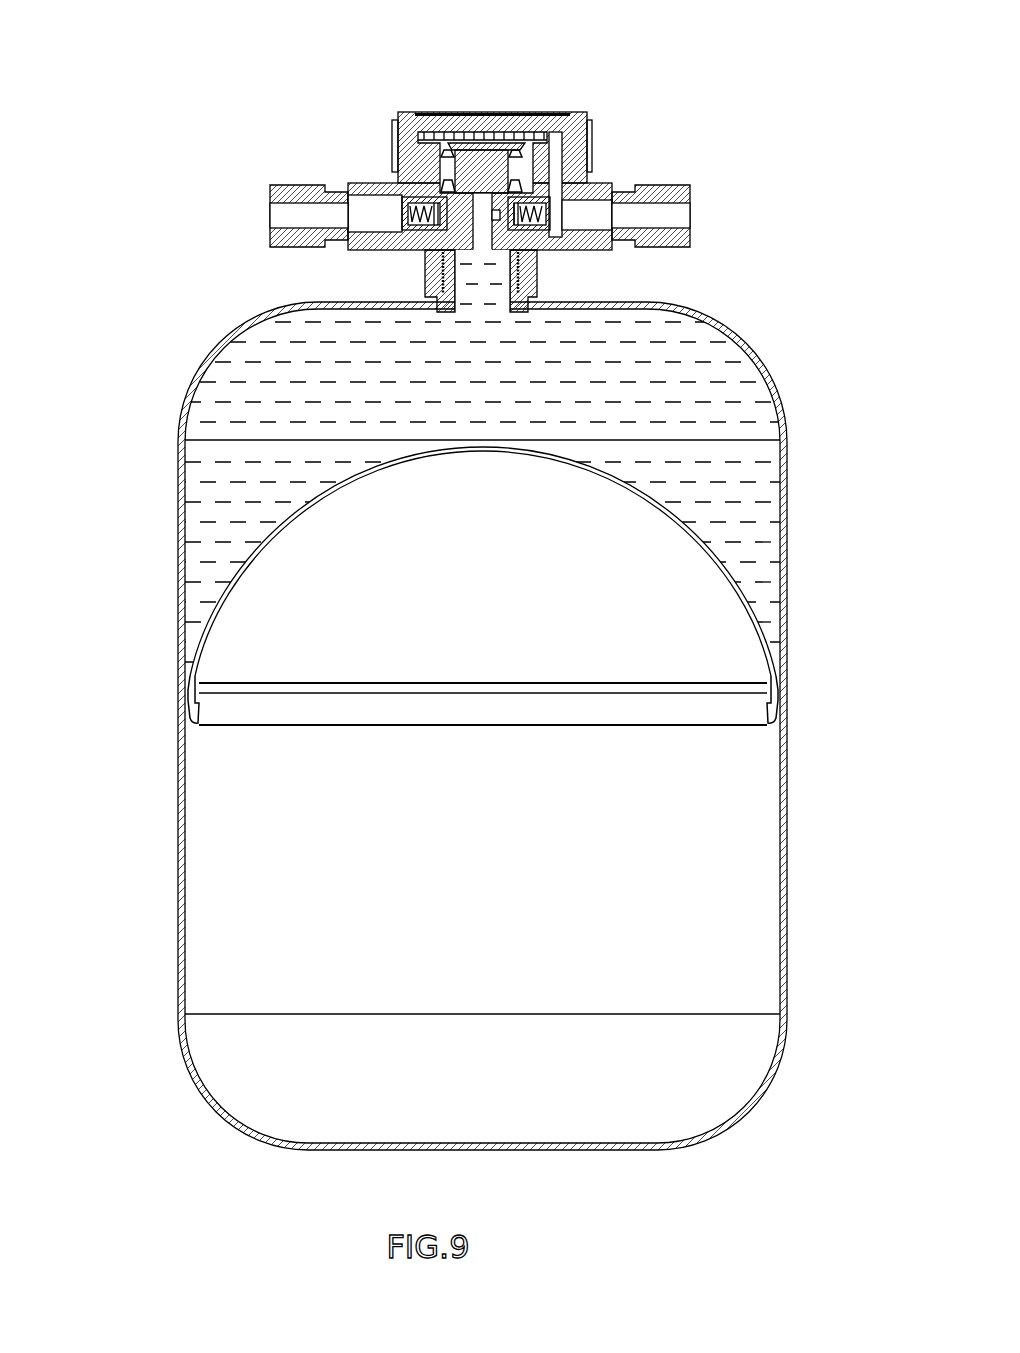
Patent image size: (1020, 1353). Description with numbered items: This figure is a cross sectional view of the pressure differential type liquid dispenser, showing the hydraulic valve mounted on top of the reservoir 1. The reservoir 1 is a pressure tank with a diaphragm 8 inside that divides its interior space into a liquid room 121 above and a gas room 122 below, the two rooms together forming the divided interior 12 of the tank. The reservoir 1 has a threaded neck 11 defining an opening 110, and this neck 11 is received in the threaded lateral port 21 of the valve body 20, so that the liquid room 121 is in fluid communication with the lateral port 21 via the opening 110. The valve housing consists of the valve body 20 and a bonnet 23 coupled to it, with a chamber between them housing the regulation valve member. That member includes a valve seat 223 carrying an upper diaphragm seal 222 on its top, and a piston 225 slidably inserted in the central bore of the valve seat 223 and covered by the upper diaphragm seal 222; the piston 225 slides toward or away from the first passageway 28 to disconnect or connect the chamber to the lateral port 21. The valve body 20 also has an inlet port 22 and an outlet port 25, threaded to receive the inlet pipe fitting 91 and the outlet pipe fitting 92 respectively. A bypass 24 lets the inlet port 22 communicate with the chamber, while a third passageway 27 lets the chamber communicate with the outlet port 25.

The reservoir 1 is at (180, 880).
The diaphragm 8 is at (259, 544).
The neck 11 is at (452, 298).
The opening 110 is at (486, 292).
The inner chamber 12 is at (90, 530).
The liquid room 121 is at (198, 576).
The gas room 122 is at (199, 802).
The valve body 20 is at (560, 247).
The lateral port 21 is at (530, 280).
The inlet port 22 is at (595, 207).
The upper diaphragm seal 222 is at (470, 150).
The valve seat 223 is at (436, 146).
The piston 225 is at (488, 153).
The bonnet 23 is at (548, 122).
The bypass 24 is at (556, 158).
The outlet port 25 is at (368, 208).
The third passageway 27 is at (448, 178).
The first passageway 28 is at (478, 243).
The inlet pipe fitting 91 is at (655, 185).
The outlet pipe fitting 92 is at (290, 187).